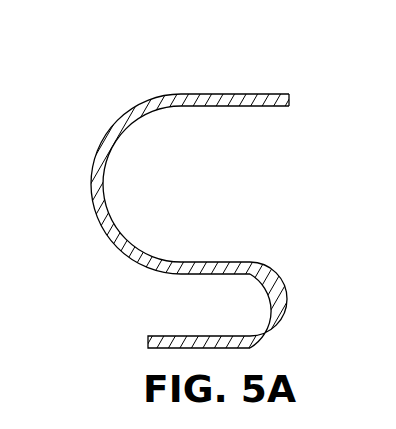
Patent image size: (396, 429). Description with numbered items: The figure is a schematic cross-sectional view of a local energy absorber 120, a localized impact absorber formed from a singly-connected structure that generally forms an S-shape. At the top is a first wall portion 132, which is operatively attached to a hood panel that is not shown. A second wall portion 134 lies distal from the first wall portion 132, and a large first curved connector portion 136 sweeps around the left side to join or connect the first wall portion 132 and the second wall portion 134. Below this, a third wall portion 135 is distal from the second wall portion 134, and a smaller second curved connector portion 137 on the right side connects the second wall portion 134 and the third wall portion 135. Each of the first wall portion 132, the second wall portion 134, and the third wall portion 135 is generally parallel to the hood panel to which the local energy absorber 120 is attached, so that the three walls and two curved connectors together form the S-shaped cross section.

The local energy absorber 120 is at (126, 77).
The first wall portion 132 is at (251, 93).
The second wall portion 134 is at (229, 262).
The third wall portion 135 is at (170, 336).
The first curved connector portion 136 is at (91, 189).
The second curved connector portion 137 is at (294, 302).